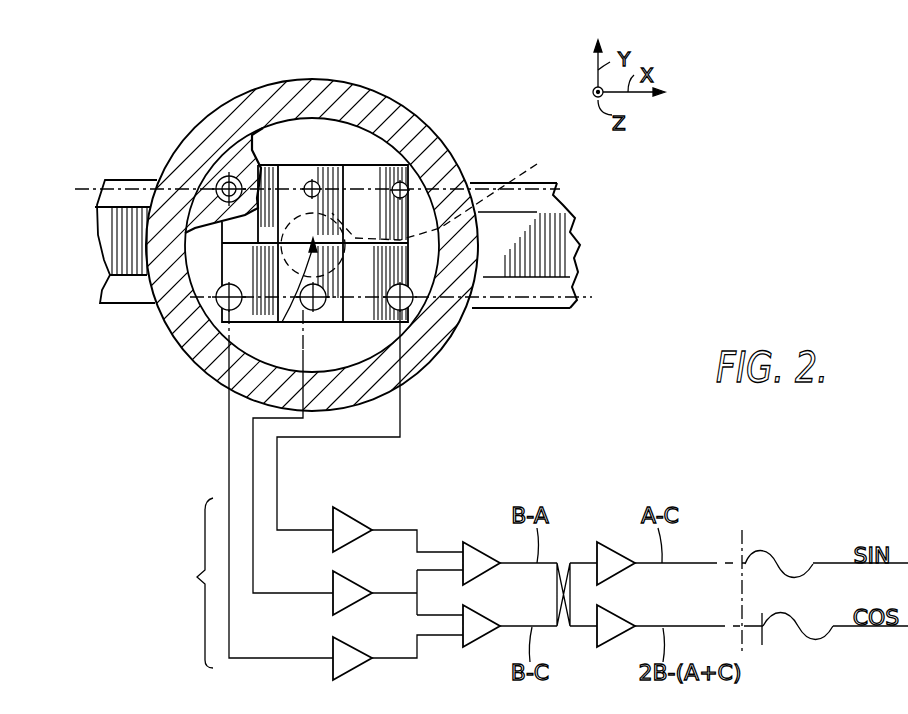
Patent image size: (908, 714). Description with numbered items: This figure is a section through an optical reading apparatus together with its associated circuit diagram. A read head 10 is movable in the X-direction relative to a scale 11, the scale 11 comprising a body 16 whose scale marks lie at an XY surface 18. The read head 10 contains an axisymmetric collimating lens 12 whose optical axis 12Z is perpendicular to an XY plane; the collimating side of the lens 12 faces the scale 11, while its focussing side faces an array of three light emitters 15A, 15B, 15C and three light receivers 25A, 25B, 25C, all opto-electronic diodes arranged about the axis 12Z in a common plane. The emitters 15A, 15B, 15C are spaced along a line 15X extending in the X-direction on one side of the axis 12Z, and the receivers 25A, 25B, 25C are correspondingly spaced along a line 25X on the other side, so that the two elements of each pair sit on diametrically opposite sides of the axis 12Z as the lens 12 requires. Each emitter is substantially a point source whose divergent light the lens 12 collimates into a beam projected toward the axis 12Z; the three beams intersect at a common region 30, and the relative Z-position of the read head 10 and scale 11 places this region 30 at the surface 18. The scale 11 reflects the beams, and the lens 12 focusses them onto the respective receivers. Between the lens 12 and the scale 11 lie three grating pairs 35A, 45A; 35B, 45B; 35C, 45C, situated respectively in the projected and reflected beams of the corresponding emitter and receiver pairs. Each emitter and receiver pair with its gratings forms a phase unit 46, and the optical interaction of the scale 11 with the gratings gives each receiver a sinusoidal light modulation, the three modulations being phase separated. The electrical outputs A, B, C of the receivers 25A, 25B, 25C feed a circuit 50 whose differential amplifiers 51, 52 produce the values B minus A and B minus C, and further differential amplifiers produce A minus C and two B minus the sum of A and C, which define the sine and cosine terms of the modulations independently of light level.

The read head 10 is at (437, 140).
The scale 11 is at (550, 217).
The collimating lens 12 is at (315, 130).
The optical axis 12Z is at (295, 286).
The light emitter 15A is at (220, 183).
The light emitter 15B is at (308, 182).
The light emitter 15C is at (408, 192).
The emitter line 15X is at (93, 185).
The scale body 16 is at (577, 242).
The XY surface of the scale 18 is at (560, 289).
The light receiver 25A is at (412, 310).
The light receiver 25B is at (398, 388).
The light receiver 25C is at (215, 302).
The receiver line 25X is at (543, 300).
The common region 30 is at (450, 191).
The grating 35A is at (263, 117).
The grating 35B is at (362, 165).
The grating 35C is at (386, 186).
The grating 45A is at (415, 298).
The grating 45B is at (322, 305).
The grating 45C is at (207, 372).
The phase unit 46 is at (376, 170).
The circuit 50 is at (313, 495).
The differential amplifier 51 is at (472, 542).
The differential amplifier 52 is at (480, 644).